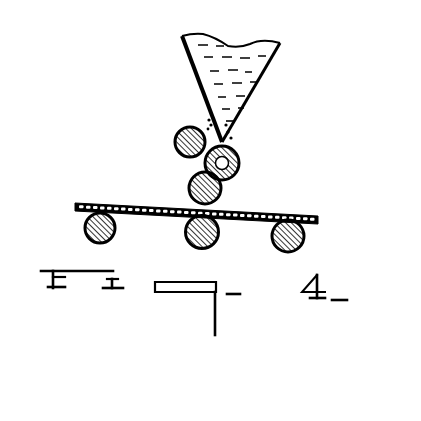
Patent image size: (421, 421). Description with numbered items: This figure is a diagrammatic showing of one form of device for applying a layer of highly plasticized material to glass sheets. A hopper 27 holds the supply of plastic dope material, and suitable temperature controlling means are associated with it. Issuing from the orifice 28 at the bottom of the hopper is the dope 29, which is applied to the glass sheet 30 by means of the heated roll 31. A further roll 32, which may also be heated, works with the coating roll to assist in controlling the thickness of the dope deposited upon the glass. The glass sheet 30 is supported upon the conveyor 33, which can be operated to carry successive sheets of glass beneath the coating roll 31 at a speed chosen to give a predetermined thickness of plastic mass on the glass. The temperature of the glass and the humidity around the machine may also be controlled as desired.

The hopper 27 is at (192, 63).
The orifice 28 is at (213, 127).
The dope 29 is at (222, 188).
The glass sheet 30 is at (280, 213).
The heated roll 31 is at (190, 190).
The roll 32 is at (241, 158).
The conveyor 33 is at (273, 237).